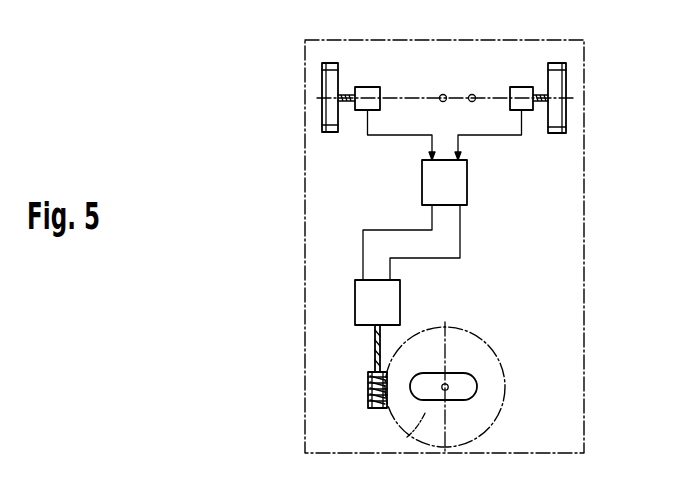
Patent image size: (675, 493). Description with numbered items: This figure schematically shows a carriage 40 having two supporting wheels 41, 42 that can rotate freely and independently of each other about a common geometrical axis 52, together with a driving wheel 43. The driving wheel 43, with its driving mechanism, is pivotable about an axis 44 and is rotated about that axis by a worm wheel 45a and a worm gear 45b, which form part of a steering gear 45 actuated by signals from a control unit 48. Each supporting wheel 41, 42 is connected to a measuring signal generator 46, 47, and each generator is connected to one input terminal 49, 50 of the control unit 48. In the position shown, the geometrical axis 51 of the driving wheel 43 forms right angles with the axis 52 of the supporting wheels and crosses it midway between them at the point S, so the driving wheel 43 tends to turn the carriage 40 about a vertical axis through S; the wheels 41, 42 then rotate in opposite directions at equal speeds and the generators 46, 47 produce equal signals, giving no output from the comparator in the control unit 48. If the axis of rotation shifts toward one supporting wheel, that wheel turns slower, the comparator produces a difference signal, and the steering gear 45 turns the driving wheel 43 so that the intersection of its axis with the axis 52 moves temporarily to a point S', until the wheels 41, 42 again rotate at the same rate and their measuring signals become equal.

The carriage 40 is at (578, 137).
The supporting wheel 41 is at (328, 83).
The supporting wheel 42 is at (566, 87).
The driving wheel 43 is at (470, 368).
The pivot axis 44 is at (448, 389).
The steering gear 45 is at (390, 303).
The worm wheel 45a is at (407, 433).
The worm gear 45b is at (367, 388).
The measuring signal generator 46 is at (368, 90).
The measuring signal generator 47 is at (522, 90).
The control unit 48 is at (455, 193).
The input terminal 49 is at (425, 147).
The input terminal 50 is at (467, 145).
The geometrical axis of the driving wheel 51 is at (447, 337).
The common geometrical axis of the supporting wheels 52 is at (420, 97).
The intersection point S is at (440, 76).
The shifted intersection point S' is at (471, 76).